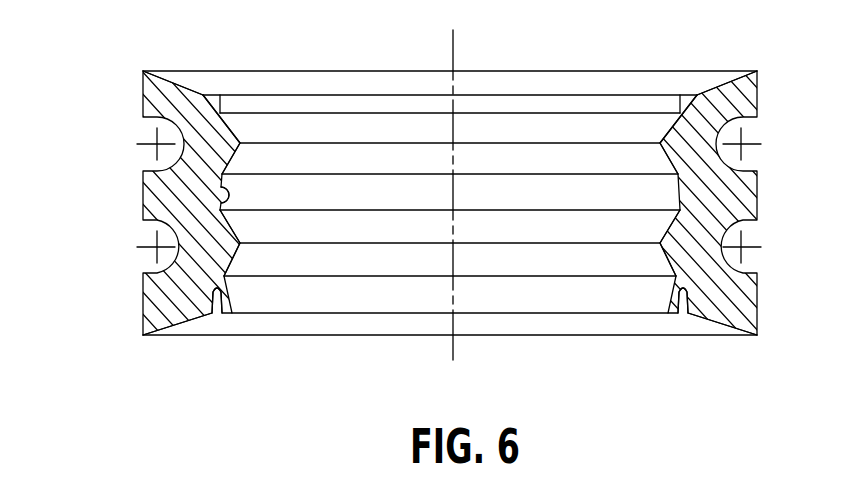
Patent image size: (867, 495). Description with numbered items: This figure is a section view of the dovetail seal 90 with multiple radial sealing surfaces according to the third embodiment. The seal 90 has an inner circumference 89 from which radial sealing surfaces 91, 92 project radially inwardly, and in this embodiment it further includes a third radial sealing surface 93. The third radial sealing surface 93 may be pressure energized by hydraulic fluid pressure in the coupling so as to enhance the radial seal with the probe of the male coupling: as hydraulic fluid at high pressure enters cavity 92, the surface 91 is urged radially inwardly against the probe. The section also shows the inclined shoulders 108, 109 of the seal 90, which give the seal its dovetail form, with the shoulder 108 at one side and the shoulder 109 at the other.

The inner circumference 89 is at (134, 230).
The seal 90 is at (450, 232).
The radial sealing surface 91 is at (450, 103).
The radial sealing surface 92 is at (450, 154).
The third radial sealing surface 93 is at (450, 337).
The inclined shoulder 108 is at (450, 54).
The inclined shoulder 109 is at (450, 354).